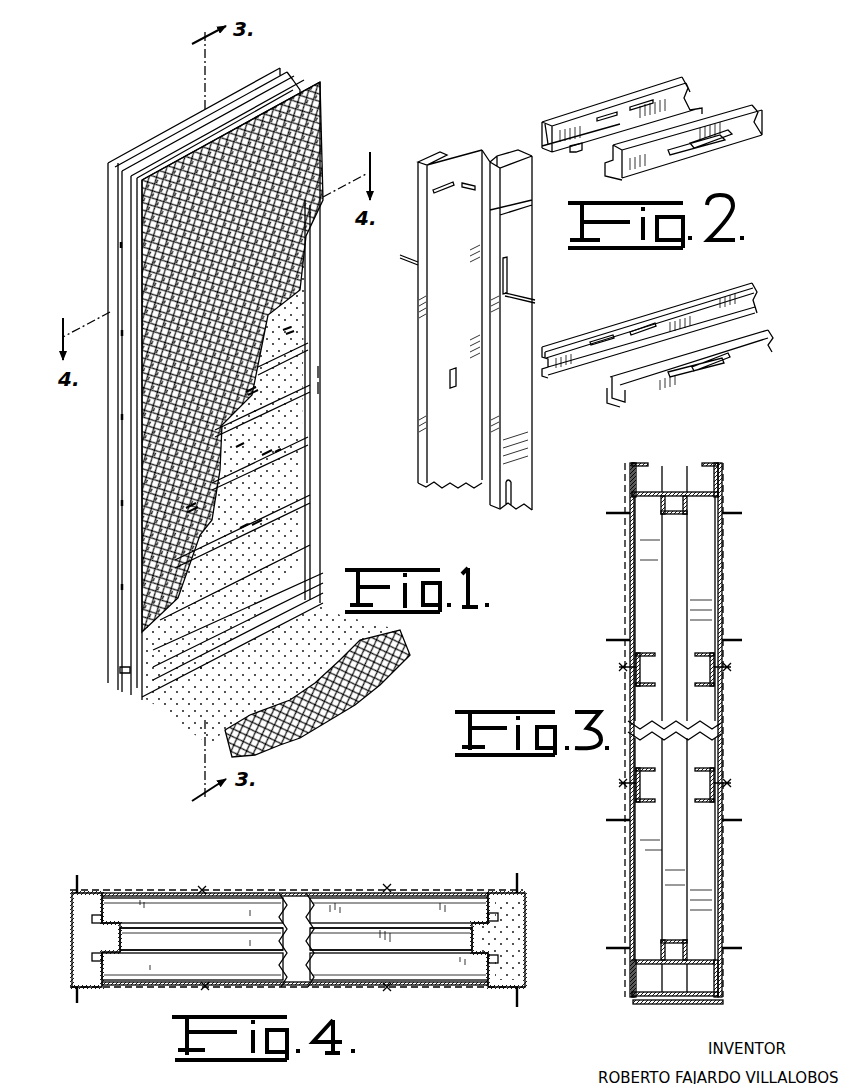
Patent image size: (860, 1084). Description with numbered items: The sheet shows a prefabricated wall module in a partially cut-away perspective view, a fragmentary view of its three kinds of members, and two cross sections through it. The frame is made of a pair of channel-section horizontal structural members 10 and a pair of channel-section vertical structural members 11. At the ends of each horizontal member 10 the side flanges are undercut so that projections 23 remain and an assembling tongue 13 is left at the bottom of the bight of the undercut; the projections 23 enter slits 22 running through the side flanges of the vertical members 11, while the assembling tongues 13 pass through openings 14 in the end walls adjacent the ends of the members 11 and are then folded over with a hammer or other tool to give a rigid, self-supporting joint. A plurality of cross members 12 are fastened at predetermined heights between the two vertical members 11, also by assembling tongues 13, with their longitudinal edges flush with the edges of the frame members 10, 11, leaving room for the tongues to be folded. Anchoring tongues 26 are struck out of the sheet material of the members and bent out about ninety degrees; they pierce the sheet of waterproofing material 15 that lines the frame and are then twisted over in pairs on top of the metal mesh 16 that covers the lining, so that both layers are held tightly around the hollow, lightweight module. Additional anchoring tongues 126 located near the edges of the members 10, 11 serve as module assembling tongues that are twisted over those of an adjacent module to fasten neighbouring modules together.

In FIG. 1, the horizontal structural member 10 is at (288, 80).
In FIG. 2, the horizontal structural member 10 is at (668, 78).
In FIG. 3, the horizontal structural member 10 is at (652, 493).
In FIG. 4, the horizontal structural member 10 is at (350, 938).
In FIG. 1, the vertical structural member 11 is at (318, 328).
In FIG. 2, the vertical structural member 11 is at (536, 468).
In FIG. 3, the vertical structural member 11 is at (707, 829).
In FIG. 4, the vertical structural member 11 is at (70, 906).
In FIG. 1, the cross member 12 is at (290, 430).
In FIG. 2, the cross member 12 is at (690, 296).
In FIG. 3, the cross member 12 is at (702, 770).
In FIG. 4, the cross member 12 is at (240, 906).
In FIG. 2, the assembling tongue 13 is at (578, 153).
In FIG. 4, the assembling tongue 13 is at (516, 926).
In FIG. 2, the opening 14 is at (470, 183).
In FIG. 4, the opening 14 is at (97, 938).
In FIG. 1, the waterproofing material 15 is at (285, 314).
In FIG. 1, the metal mesh 16 is at (323, 124).
In FIG. 2, the slit 22 is at (440, 188).
In FIG. 2, the projection 23 is at (547, 135).
In FIG. 1, the anchoring tongue 26 is at (283, 465).
In FIG. 2, the anchoring tongue 26 is at (700, 152).
In FIG. 3, the anchoring tongue 26 is at (726, 788).
In FIG. 4, the anchoring tongue 26 is at (388, 990).
In FIG. 1, the module assembling tongue 126 is at (116, 346).
In FIG. 2, the module assembling tongue 126 is at (536, 299).
In FIG. 3, the module assembling tongue 126 is at (738, 826).
In FIG. 4, the module assembling tongue 126 is at (77, 1001).